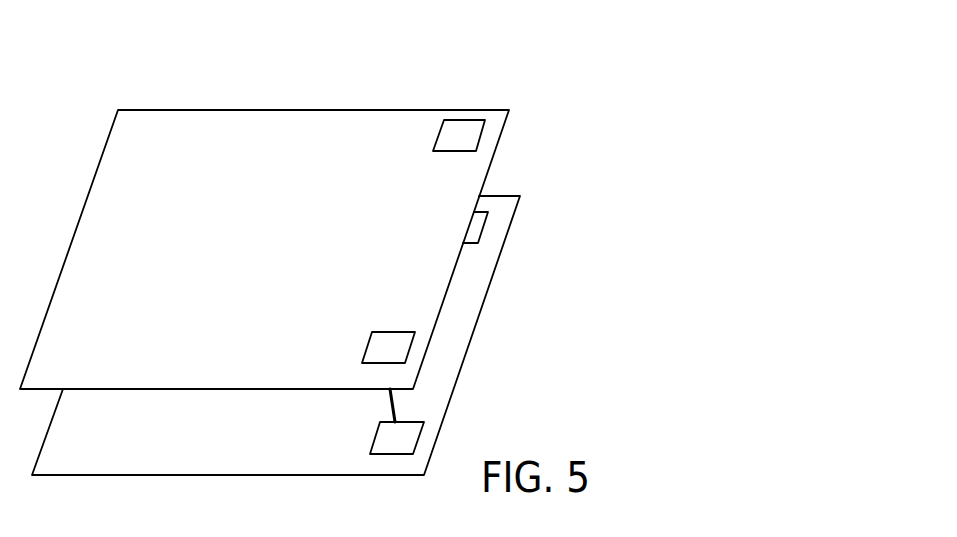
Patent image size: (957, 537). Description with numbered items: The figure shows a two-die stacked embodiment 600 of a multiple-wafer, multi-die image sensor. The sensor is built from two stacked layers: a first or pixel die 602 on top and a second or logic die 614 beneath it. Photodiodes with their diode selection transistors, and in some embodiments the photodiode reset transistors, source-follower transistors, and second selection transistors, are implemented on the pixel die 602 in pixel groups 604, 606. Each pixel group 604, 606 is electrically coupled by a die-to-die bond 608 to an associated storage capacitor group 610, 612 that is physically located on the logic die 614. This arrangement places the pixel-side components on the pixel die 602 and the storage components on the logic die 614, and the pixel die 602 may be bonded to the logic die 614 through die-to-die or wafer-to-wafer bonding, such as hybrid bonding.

The two-die stacked embodiment 600 is at (623, 80).
The first or pixel die 602 is at (313, 119).
The pixel group 604 is at (462, 128).
The pixel group 606 is at (378, 352).
The die-to-die bond 608 is at (395, 407).
The storage capacitor group 610 is at (479, 222).
The storage capacitor group 612 is at (415, 447).
The second or logic die 614 is at (470, 323).